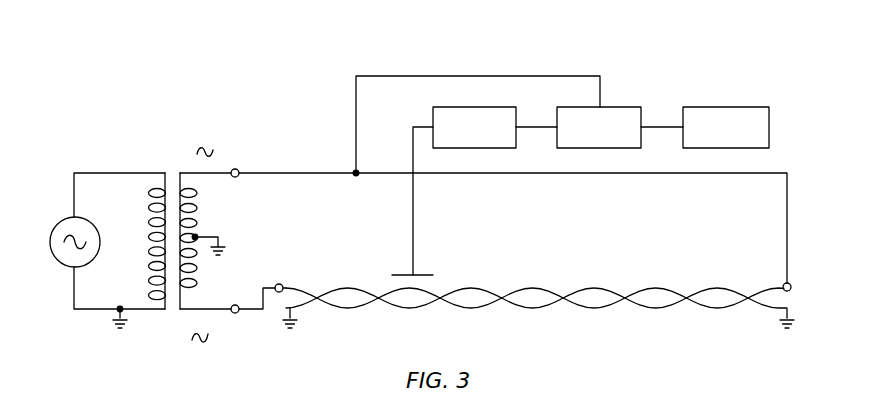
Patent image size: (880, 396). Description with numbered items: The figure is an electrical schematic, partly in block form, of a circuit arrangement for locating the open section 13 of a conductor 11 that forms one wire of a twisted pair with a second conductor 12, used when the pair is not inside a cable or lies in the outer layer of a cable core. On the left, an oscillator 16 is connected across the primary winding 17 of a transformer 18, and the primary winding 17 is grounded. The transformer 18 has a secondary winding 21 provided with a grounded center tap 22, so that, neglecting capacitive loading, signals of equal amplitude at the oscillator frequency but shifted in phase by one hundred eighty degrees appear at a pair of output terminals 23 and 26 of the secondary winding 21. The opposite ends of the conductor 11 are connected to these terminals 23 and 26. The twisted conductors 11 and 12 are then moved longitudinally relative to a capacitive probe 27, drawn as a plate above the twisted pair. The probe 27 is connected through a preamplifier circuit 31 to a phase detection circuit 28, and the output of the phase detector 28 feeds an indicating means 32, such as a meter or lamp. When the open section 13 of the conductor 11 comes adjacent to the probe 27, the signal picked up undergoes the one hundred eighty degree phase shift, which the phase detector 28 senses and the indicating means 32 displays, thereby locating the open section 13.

The conductor 11 is at (296, 286).
The conductor 12 is at (310, 310).
The open section 13 is at (422, 283).
The oscillator 16 is at (61, 223).
The primary winding 17 is at (149, 250).
The transformer 18 is at (174, 209).
The secondary winding 21 is at (199, 223).
The grounded center tap 22 is at (219, 234).
The output terminal 23 is at (236, 169).
The output terminal 26 is at (236, 313).
The capacitive probe 27 is at (404, 275).
The phase detection circuit 28 is at (617, 107).
The preamplifier circuit 31 is at (500, 107).
The indicating means 32 is at (745, 107).